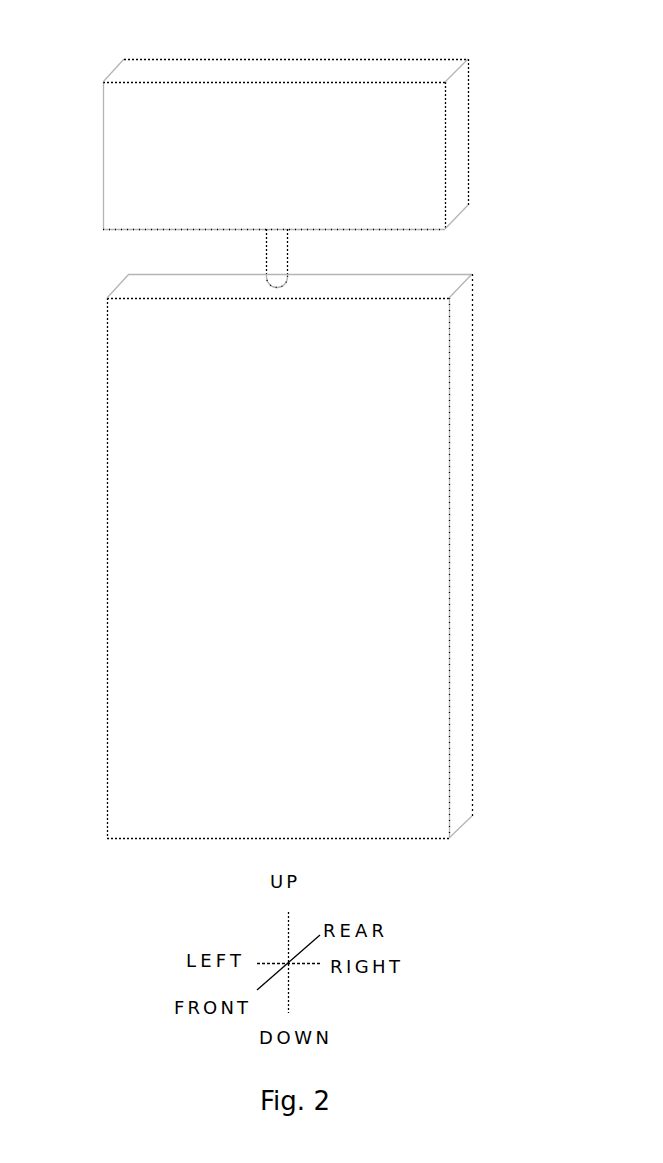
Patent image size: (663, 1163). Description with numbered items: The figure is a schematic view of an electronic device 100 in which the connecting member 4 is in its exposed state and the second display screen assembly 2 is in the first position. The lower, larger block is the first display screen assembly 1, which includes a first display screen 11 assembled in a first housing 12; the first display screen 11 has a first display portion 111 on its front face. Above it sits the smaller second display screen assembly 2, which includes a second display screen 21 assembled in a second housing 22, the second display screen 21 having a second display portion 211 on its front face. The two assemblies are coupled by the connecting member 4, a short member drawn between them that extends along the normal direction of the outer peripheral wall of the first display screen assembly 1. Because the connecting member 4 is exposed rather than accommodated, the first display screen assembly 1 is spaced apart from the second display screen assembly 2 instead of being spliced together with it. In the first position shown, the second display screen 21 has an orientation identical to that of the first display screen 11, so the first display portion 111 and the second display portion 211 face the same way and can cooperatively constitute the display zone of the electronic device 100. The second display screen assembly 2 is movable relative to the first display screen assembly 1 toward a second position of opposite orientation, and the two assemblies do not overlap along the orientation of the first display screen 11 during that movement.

The electronic device 100 is at (322, 26).
The first display screen assembly 1 is at (294, 556).
The first display screen 11 is at (279, 556).
The first display portion 111 is at (132, 550).
The first housing 12 is at (530, 460).
The second display screen assembly 2 is at (302, 144).
The second display screen 21 is at (286, 144).
The second display portion 211 is at (118, 150).
The second housing 22 is at (527, 75).
The connecting member 4 is at (278, 249).